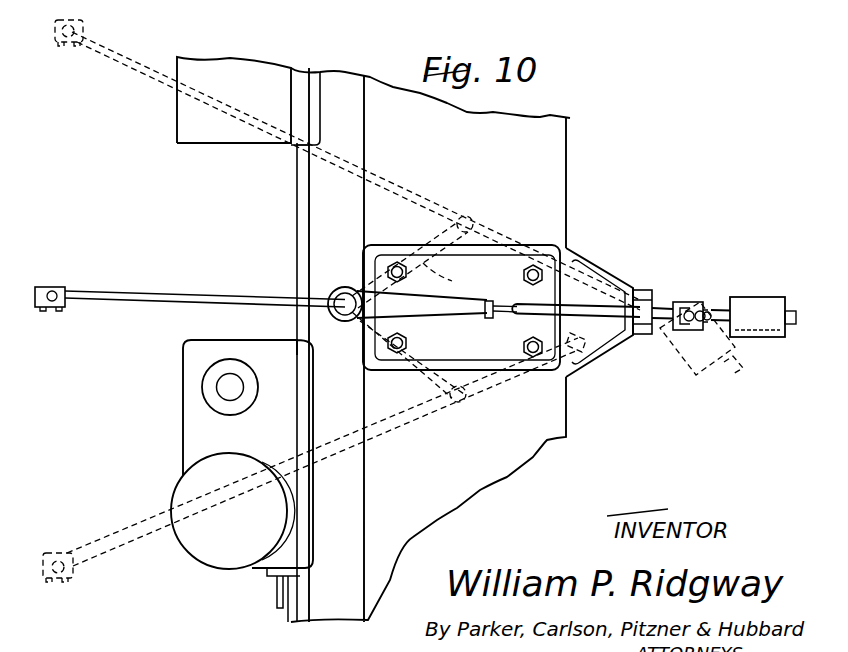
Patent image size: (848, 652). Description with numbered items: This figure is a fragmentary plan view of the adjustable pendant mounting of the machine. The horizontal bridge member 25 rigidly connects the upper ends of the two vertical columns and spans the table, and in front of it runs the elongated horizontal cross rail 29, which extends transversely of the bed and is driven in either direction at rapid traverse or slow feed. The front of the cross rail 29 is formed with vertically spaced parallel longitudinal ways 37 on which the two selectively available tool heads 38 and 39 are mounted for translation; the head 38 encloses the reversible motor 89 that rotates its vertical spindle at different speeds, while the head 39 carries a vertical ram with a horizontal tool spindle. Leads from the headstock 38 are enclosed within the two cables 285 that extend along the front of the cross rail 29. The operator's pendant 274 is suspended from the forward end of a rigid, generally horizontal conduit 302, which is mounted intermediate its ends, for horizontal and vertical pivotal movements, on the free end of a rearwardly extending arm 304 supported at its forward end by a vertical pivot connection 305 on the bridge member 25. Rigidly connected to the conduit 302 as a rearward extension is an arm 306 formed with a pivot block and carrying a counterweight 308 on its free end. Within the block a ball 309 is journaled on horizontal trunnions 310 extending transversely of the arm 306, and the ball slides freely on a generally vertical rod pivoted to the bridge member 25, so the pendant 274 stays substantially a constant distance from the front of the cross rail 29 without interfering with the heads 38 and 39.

The bridge member 25 is at (553, 193).
The cross rail 29 is at (312, 217).
The longitudinal ways 37 is at (297, 243).
The tool head 38 is at (185, 382).
The tool head 39 is at (183, 118).
The motor 89 is at (190, 487).
The pendant 274 is at (60, 289).
The cables 285 is at (277, 596).
The conduit 302 is at (244, 299).
The arm 304 is at (437, 297).
The pivot connection 305 is at (341, 289).
The arm 306 is at (550, 306).
The counterweight 308 is at (768, 290).
The ball 309 is at (688, 302).
The trunnions 310 is at (693, 303).